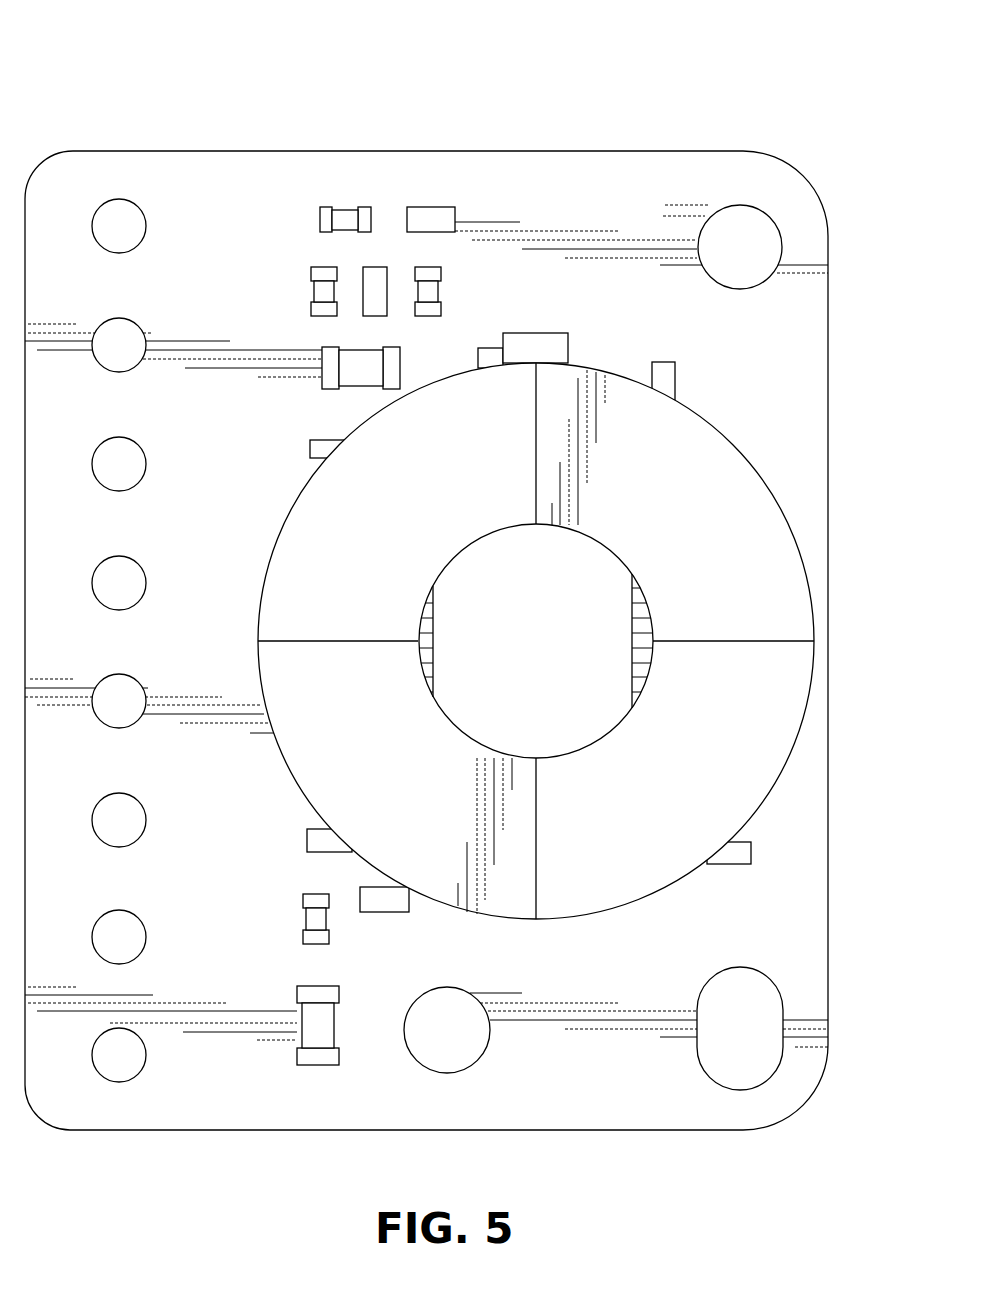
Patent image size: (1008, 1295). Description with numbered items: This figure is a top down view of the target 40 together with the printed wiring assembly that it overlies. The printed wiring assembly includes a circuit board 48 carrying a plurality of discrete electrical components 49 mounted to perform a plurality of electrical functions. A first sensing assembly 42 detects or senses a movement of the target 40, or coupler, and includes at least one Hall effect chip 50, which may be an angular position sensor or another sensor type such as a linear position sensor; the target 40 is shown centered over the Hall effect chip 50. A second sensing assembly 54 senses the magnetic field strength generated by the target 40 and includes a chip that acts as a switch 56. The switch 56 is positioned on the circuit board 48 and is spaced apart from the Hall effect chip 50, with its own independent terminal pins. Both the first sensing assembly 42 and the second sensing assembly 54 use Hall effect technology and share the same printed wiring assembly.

The circuit board 48 is at (188, 86).
The second sensing assembly 54 is at (678, 150).
The first sensing assembly 42 is at (682, 1121).
The discrete electrical components 49 is at (278, 279).
The switch 56 is at (528, 347).
The target 40 is at (693, 565).
The Hall effect chip 50 is at (562, 697).